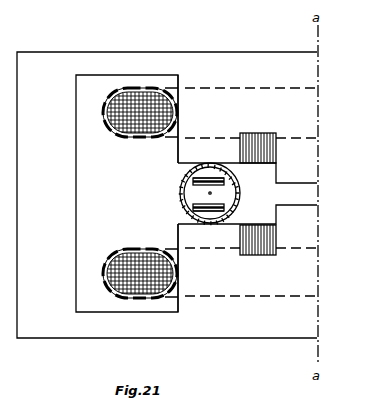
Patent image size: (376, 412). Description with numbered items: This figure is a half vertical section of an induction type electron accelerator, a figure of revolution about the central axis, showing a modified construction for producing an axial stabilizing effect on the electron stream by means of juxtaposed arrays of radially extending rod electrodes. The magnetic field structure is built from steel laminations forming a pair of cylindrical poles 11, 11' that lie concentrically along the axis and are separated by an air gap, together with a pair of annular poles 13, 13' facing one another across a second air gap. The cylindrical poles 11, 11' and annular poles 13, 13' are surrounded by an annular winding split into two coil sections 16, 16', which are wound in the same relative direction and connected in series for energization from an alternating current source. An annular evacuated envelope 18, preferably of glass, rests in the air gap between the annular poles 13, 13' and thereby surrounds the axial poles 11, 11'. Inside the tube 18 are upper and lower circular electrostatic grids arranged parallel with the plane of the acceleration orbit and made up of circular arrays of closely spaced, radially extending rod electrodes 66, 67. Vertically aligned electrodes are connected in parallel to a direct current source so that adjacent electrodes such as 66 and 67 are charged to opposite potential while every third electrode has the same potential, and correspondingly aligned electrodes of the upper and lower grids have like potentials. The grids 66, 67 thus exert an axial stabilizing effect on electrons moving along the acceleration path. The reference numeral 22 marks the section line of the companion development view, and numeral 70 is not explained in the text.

The cylindrical pole 11 is at (262, 158).
The cylindrical pole 11' is at (264, 230).
The annular pole 13 is at (167, 119).
The annular pole 13' is at (168, 268).
The coil section 16 is at (131, 119).
The coil section 16' is at (131, 264).
The annular evacuated envelope 18 is at (185, 183).
The permanent magnet 22 is at (209, 245).
The rod electrode 66 is at (240, 178).
The rod electrode 67 is at (238, 206).
The rotor shaft 70 is at (209, 193).